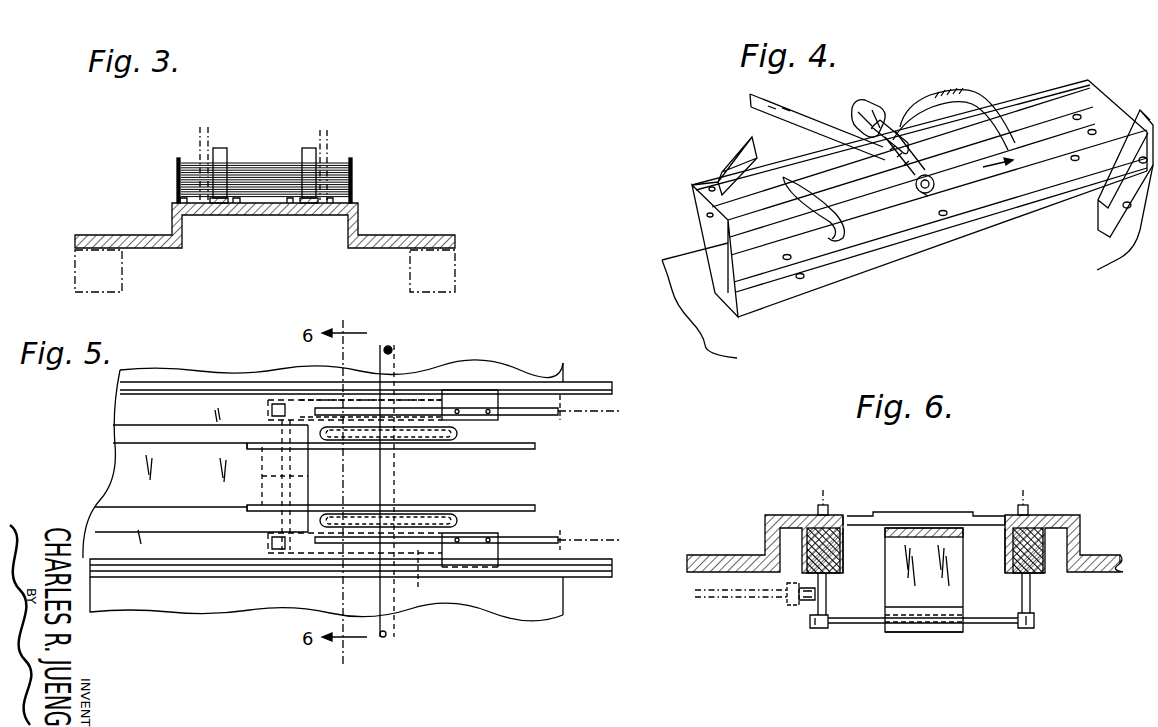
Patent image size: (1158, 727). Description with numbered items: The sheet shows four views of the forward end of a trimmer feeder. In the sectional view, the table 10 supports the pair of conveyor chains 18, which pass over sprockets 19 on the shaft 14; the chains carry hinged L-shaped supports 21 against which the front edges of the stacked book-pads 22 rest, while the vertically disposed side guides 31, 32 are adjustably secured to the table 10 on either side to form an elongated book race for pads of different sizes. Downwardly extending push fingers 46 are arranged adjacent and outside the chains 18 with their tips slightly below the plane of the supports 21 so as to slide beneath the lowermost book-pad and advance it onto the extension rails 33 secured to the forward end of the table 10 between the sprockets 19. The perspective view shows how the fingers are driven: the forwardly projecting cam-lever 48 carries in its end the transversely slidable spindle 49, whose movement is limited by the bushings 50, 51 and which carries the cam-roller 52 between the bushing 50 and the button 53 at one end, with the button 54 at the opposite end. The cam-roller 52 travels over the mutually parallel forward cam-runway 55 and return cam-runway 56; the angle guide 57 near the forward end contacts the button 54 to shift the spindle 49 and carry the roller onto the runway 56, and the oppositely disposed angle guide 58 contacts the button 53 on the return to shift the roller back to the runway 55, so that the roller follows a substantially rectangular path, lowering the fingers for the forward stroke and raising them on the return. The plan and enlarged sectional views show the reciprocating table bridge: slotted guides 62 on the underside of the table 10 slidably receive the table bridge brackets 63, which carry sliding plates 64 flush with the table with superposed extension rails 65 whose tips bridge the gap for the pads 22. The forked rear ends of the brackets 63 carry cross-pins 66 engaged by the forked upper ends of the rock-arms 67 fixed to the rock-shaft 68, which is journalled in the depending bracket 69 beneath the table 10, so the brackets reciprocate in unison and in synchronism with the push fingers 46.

In FIG. 3, the table 10 is at (130, 235).
In FIG. 5, the table 10 is at (173, 629).
In FIG. 6, the table 10 is at (925, 512).
In FIG. 5, the shaft 14 is at (390, 473).
In FIG. 3, the conveyor chains 18 is at (223, 209).
In FIG. 5, the sprockets 19 is at (434, 520).
In FIG. 3, the L-shaped supports 21 is at (227, 152).
In FIG. 3, the book-pads 22 is at (267, 166).
In FIG. 3, the side guide 31 is at (352, 168).
In FIG. 5, the side guide 31 is at (244, 381).
In FIG. 3, the side guide 32 is at (177, 168).
In FIG. 5, the side guide 32 is at (227, 567).
In FIG. 5, the extension rails 33 is at (505, 507).
In FIG. 3, the push finger 46 is at (207, 128).
In FIG. 4, the cam-lever 48 is at (755, 107).
In FIG. 4, the spindle 49 is at (923, 158).
In FIG. 4, the bushing 50 is at (882, 131).
In FIG. 4, the bushing 51 is at (915, 185).
In FIG. 4, the cam-roller 52 is at (860, 93).
In FIG. 4, the button 53 is at (862, 106).
In FIG. 4, the button 54 is at (924, 193).
In FIG. 4, the forward cam-runway 55 is at (1023, 155).
In FIG. 4, the return cam-runway 56 is at (930, 102).
In FIG. 4, the angle guide 57 is at (1110, 173).
In FIG. 4, the angle guide 58 is at (740, 158).
In FIG. 6, the slotted guides 62 is at (845, 548).
In FIG. 5, the table bridge brackets 63 is at (415, 398).
In FIG. 6, the table bridge brackets 63 is at (823, 530).
In FIG. 5, the sliding plates 64 is at (477, 402).
In FIG. 6, the sliding plates 64 is at (774, 515).
In FIG. 5, the extension rails 65 is at (556, 416).
In FIG. 6, the extension rails 65 is at (824, 505).
In FIG. 5, the cross-pins 66 is at (268, 412).
In FIG. 6, the rock-arms 67 is at (828, 607).
In FIG. 5, the rock-shaft 68 is at (290, 522).
In FIG. 6, the rock-shaft 68 is at (1002, 603).
In FIG. 5, the depending bracket 69 is at (300, 476).
In FIG. 6, the depending bracket 69 is at (924, 580).